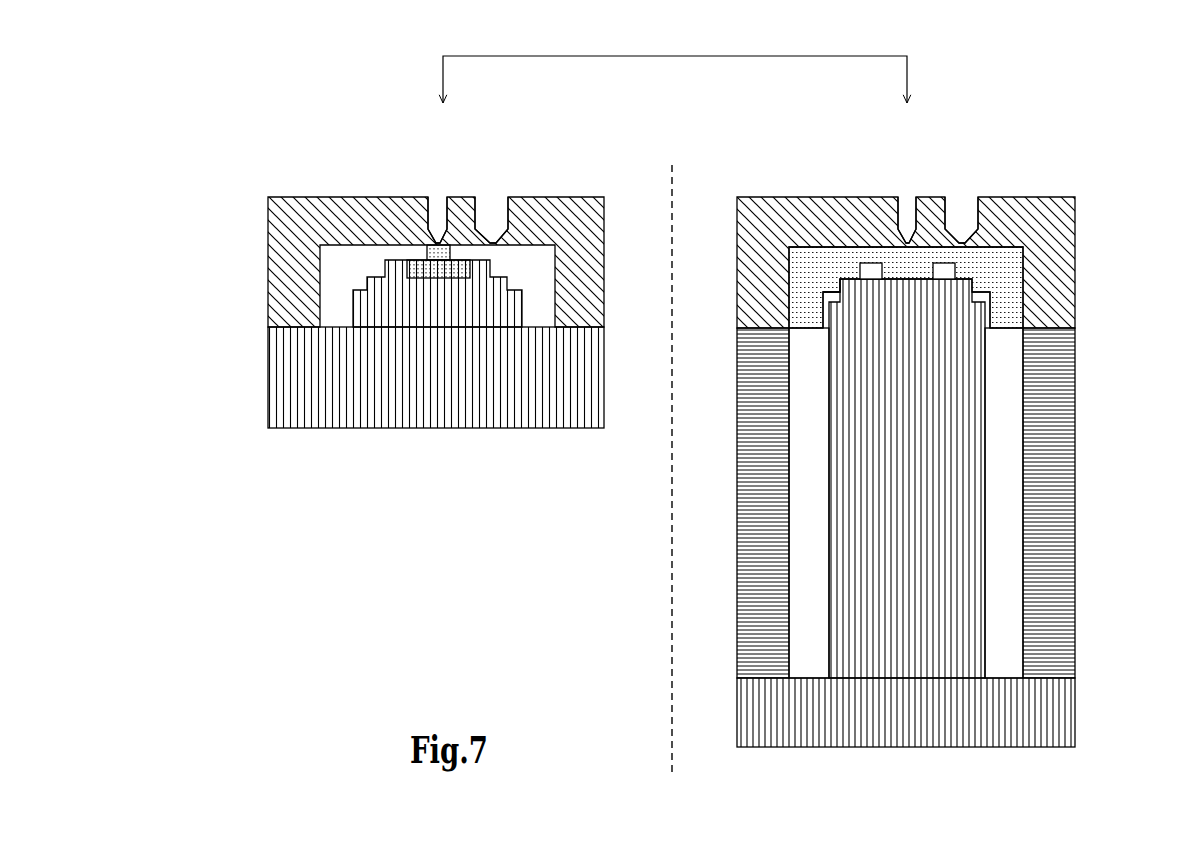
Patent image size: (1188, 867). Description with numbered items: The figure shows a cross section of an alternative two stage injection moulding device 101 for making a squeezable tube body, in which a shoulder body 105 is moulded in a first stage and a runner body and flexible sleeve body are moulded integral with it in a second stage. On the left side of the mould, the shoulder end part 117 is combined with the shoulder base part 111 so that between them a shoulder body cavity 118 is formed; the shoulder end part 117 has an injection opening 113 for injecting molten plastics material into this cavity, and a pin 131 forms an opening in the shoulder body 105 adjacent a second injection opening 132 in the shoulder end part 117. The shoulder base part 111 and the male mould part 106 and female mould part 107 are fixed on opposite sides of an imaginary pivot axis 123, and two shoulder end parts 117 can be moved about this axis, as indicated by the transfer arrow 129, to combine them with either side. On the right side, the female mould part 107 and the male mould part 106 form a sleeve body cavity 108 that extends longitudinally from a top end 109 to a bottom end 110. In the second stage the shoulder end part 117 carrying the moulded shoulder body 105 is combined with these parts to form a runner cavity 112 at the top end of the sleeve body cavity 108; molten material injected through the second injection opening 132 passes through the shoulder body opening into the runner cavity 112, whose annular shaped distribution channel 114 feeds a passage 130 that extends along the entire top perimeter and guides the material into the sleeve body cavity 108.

The two stage injection moulding device 101 is at (1032, 112).
The shoulder body 105 is at (1000, 270).
The male mould part 106 is at (1047, 710).
The female mould part 107 is at (1045, 560).
The sleeve body cavity 108 is at (1000, 453).
The top end 109 is at (1003, 362).
The bottom end 110 is at (1002, 628).
The shoulder base part 111 is at (322, 387).
The runner cavity 112 is at (866, 262).
The injection opening 113 is at (497, 212).
The annular shaped distribution channel 114 is at (820, 297).
The shoulder end part 117 is at (283, 224).
The shoulder body cavity 118 is at (343, 305).
The imaginary pivot axis 123 is at (668, 727).
The cover attachment span 129 is at (640, 56).
The passage 130 is at (993, 309).
The pin 131 is at (413, 243).
The second injection opening 132 is at (435, 213).